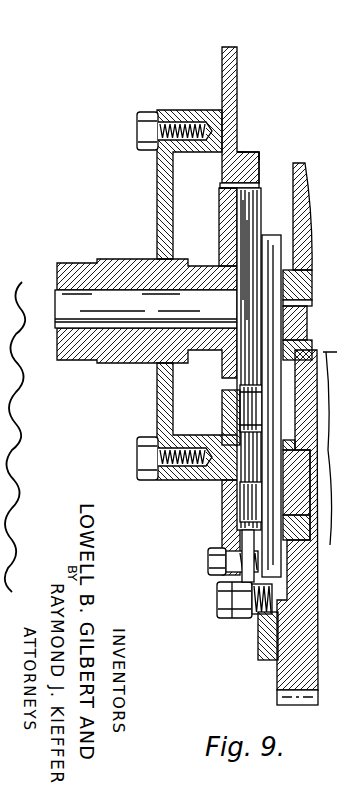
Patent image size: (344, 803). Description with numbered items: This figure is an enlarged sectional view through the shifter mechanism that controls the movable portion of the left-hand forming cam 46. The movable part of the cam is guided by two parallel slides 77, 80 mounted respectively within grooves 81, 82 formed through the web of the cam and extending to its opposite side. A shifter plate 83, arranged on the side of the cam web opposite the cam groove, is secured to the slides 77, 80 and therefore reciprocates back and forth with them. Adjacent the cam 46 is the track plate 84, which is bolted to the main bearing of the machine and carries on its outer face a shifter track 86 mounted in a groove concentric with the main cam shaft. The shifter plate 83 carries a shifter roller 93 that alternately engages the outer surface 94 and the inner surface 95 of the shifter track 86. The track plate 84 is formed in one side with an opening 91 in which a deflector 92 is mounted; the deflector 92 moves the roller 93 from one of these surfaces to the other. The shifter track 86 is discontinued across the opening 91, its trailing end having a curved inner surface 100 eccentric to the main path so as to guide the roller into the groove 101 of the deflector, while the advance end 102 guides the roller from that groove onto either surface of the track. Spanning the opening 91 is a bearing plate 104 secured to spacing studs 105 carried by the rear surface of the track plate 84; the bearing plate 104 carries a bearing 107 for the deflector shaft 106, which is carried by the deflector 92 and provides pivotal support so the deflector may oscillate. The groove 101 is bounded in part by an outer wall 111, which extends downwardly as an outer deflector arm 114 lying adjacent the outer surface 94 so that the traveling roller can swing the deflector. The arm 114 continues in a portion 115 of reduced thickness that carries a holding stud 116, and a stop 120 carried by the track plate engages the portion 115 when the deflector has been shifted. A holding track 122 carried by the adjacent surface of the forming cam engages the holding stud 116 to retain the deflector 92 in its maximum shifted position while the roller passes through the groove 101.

The forming cam 46 is at (302, 210).
The slide 77 is at (308, 494).
The slide 80 is at (306, 312).
The groove 81 is at (306, 516).
The groove 82 is at (309, 302).
The shifter plate 83 is at (270, 236).
The track plate 84 is at (236, 89).
The shifter track 86 is at (244, 151).
The opening 91 is at (219, 191).
The deflector 92 is at (214, 208).
The shifter roller 93 is at (244, 399).
The outer surface 94 is at (262, 153).
The inner surface 95 is at (253, 186).
The curved inner surface 100 is at (235, 433).
The groove 101 is at (248, 240).
The advance end 102 is at (249, 158).
The bearing plate 104 is at (174, 165).
The spacing studs 105 is at (189, 119).
The deflector shaft 106 is at (58, 300).
The bearing 107 is at (140, 363).
The outer wall 111 is at (247, 222).
The outer deflector arm 114 is at (255, 514).
The portion of reduced thickness 115 is at (258, 614).
The holding stud 116 is at (246, 597).
The stop 120 is at (230, 552).
The holding track 122 is at (259, 648).